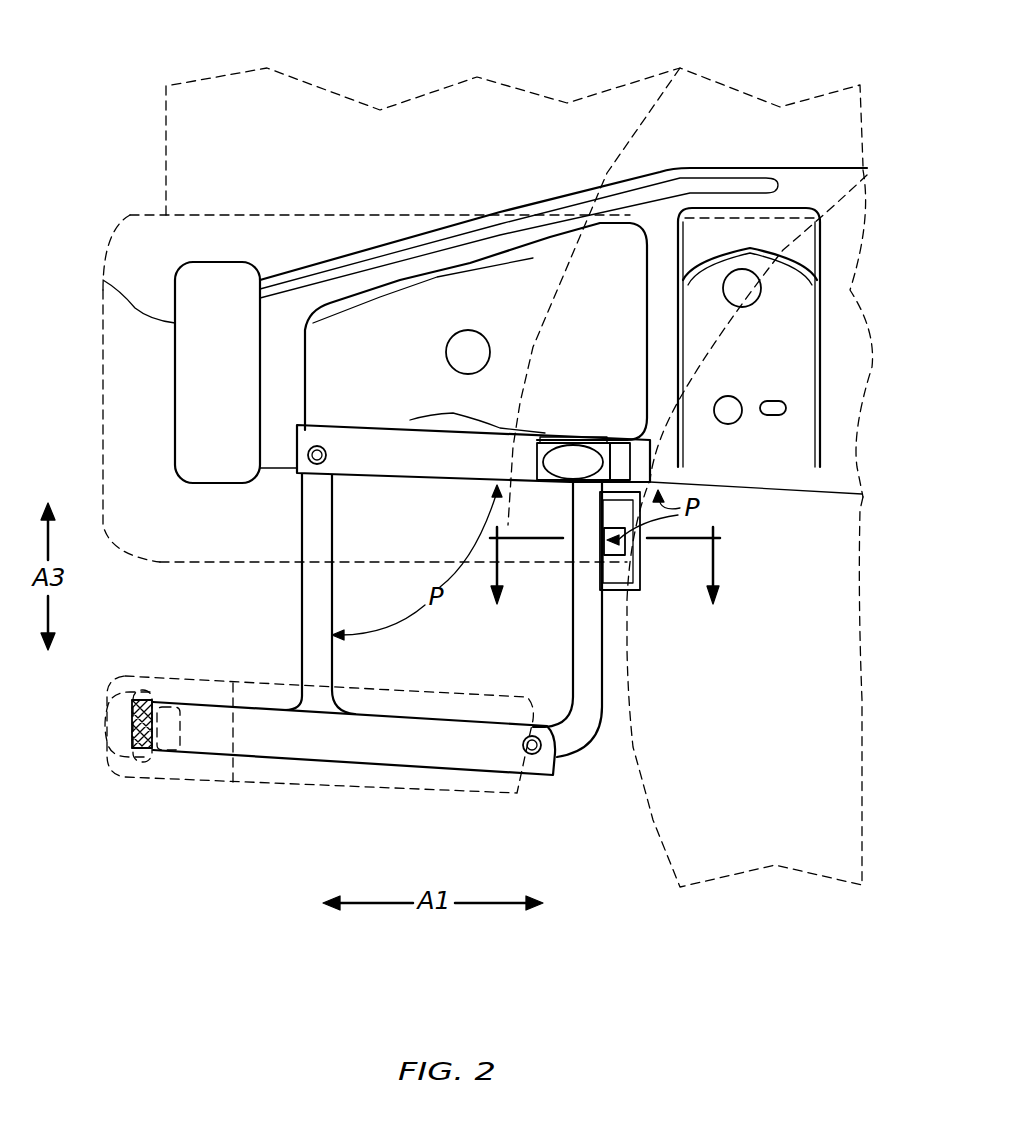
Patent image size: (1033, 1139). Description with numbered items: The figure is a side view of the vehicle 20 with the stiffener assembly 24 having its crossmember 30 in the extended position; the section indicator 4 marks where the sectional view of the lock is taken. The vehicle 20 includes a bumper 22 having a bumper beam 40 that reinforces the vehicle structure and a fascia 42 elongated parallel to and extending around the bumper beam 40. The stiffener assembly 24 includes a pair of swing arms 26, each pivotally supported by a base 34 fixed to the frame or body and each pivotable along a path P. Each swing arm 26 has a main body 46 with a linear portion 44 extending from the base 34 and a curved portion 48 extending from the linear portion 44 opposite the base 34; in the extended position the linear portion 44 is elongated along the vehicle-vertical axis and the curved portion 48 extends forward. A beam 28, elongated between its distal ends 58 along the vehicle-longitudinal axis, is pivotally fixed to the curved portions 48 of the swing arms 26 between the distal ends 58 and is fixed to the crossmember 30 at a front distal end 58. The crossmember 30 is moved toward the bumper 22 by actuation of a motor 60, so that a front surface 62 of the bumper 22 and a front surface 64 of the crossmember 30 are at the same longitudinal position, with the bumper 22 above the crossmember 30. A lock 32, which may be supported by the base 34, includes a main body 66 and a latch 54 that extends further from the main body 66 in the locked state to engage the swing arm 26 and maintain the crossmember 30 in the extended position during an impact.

The vehicle 20 is at (92, 80).
The bumper 22 is at (326, 388).
The stiffener assembly 24 is at (299, 738).
The swing arm 26 is at (415, 656).
The beam 28 is at (346, 748).
The crossmember 30 is at (125, 678).
The lock 32 is at (647, 561).
The base 34 is at (442, 455).
The bumper beam 40 is at (175, 323).
The fascia 42 is at (100, 486).
The linear portion 44 is at (300, 612).
The main body 46 is at (300, 535).
The curved portion 48 is at (302, 700).
The latch 54 is at (628, 545).
The distal end 58 is at (132, 738).
The motor 60 is at (565, 455).
The front surface of the bumper 62 is at (100, 440).
The front surface of the crossmember 64 is at (110, 705).
The main body of the lock 66 is at (615, 575).
The section line 4- 4 is at (604, 579).